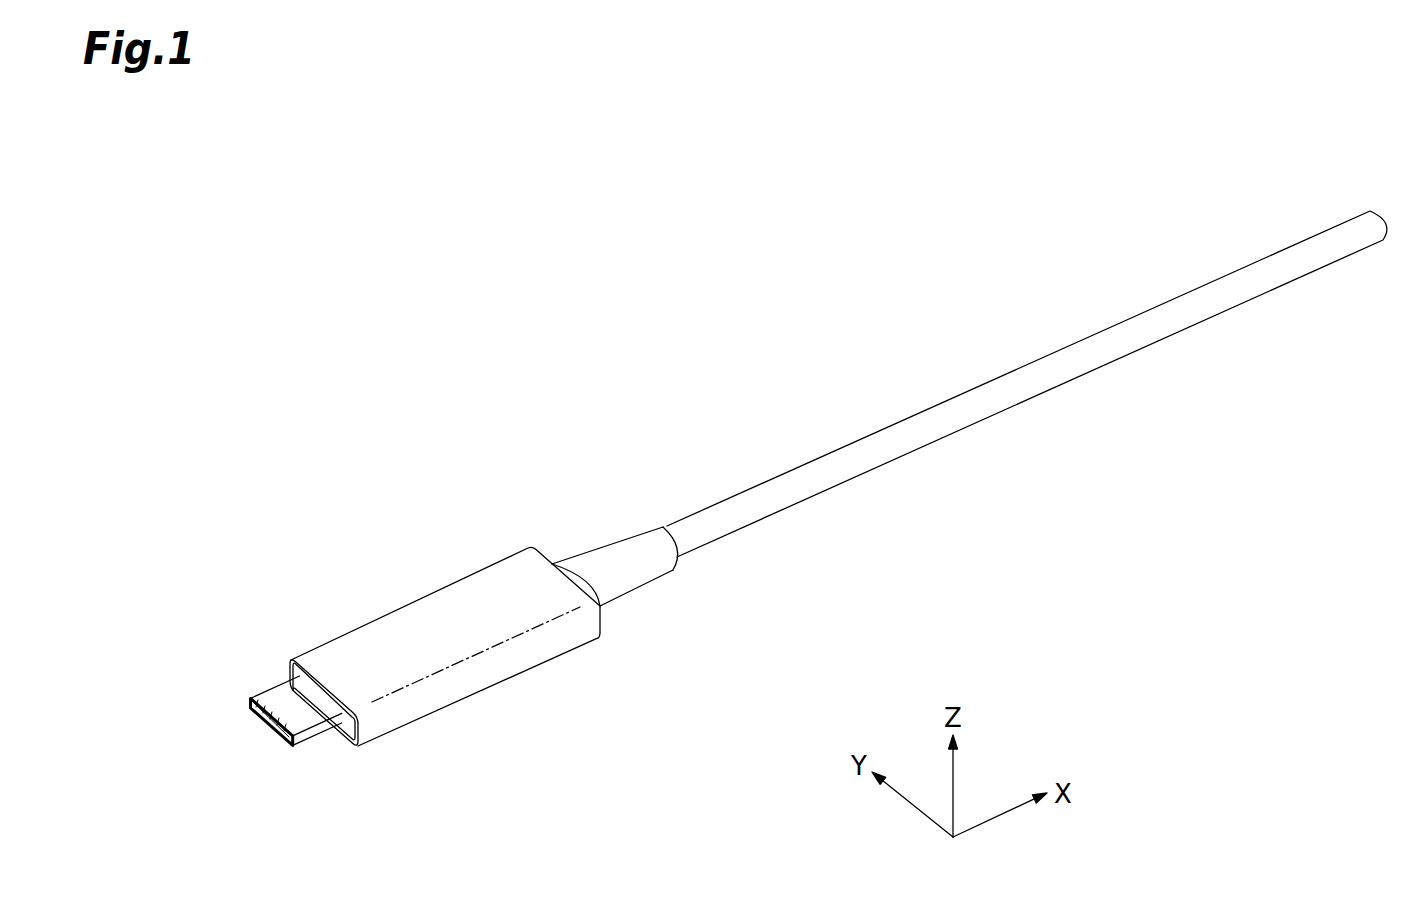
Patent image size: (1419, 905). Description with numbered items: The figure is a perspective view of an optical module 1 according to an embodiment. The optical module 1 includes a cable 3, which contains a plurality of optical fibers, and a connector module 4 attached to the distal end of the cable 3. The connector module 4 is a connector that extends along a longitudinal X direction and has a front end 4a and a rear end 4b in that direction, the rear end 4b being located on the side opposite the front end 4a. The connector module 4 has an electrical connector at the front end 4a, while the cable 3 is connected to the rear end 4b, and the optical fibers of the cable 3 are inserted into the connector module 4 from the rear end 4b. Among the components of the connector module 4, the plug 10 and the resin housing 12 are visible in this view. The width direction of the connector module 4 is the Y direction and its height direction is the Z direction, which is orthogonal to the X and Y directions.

The optical module 1 is at (402, 312).
The cable 3 is at (997, 378).
The connector module 4 is at (485, 560).
The front end 4a is at (248, 703).
The rear end 4b is at (663, 527).
The plug 10 is at (261, 690).
The resin housing 12 is at (396, 603).